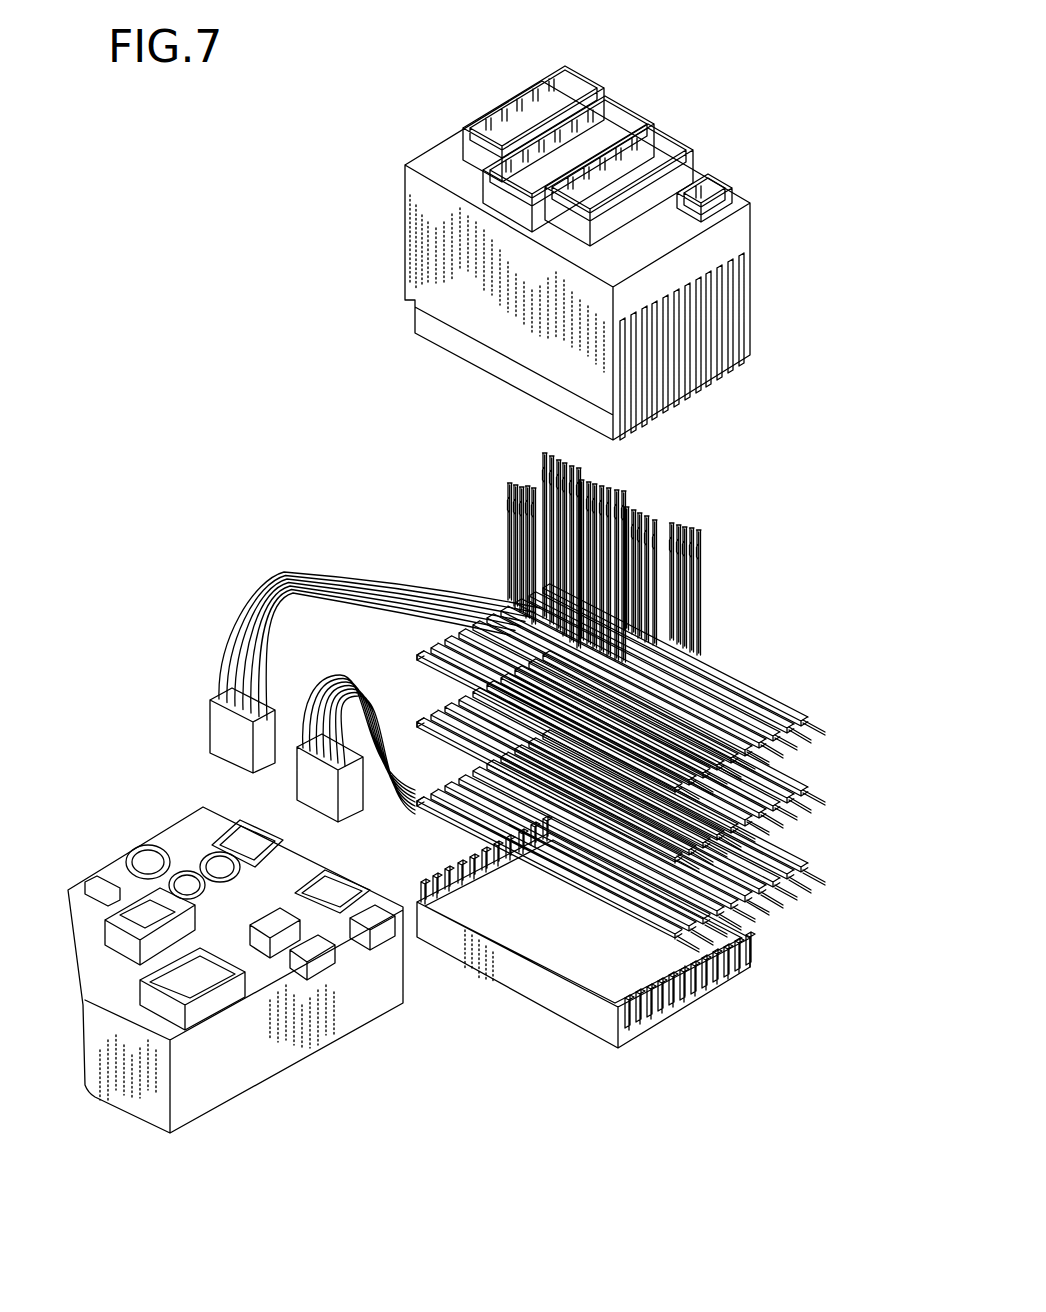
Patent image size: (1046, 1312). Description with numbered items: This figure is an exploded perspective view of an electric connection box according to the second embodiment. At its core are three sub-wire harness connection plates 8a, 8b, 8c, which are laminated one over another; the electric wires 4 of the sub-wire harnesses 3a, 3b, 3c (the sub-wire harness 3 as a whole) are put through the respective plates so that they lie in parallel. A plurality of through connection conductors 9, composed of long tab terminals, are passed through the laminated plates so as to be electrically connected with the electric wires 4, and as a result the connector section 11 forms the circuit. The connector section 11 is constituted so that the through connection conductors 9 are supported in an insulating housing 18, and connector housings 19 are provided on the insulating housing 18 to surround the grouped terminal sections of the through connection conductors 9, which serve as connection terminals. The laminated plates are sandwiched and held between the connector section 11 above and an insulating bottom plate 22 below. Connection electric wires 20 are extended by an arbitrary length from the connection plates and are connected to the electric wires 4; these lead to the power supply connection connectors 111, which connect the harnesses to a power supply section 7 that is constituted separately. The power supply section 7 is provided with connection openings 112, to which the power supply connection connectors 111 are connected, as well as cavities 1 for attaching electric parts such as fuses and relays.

The cavities 1 is at (148, 905).
The sub-wire harness 3 is at (628, 768).
The sub-wire harness 3a is at (826, 868).
The sub-wire harness 3b is at (826, 790).
The sub-wire harness 3c is at (790, 690).
The electric wires 4 is at (824, 733).
The power supply section 7 is at (64, 934).
The sub-wire harness connection plate 8a is at (445, 832).
The sub-wire harness connection plate 8b is at (420, 715).
The sub-wire harness connection plate 8c is at (415, 652).
The through connection conductors 9 is at (510, 508).
The connector section 11 is at (764, 212).
The insulating housing 18 is at (420, 270).
The connector housings 19 is at (610, 95).
The connection electric wires 20 is at (355, 575).
The insulating bottom plate 22 is at (540, 980).
The power supply connection connectors 111 is at (212, 728).
The connection openings 112 is at (256, 836).